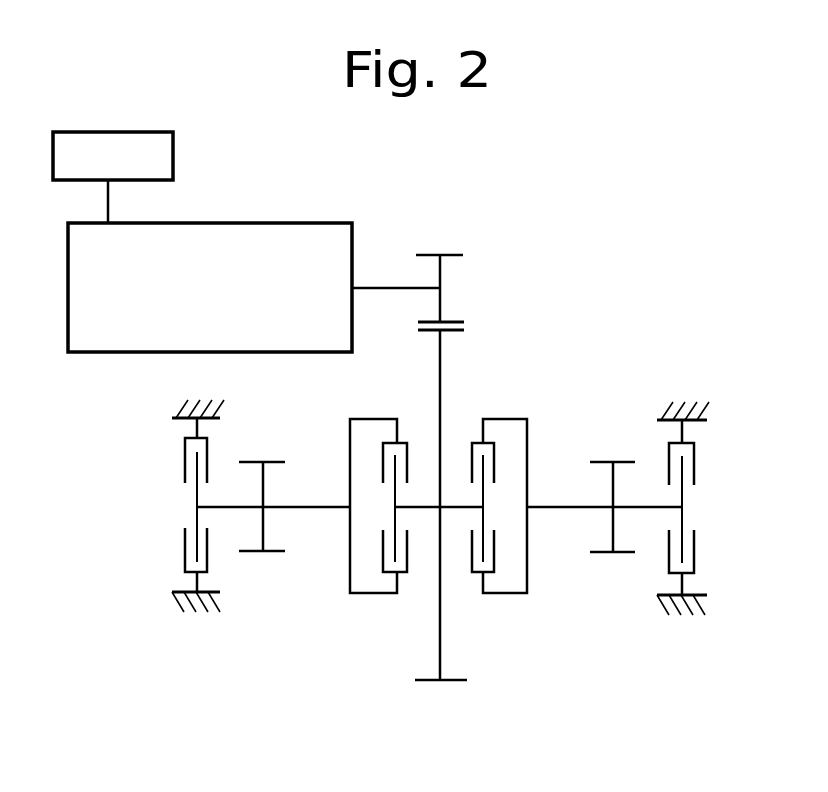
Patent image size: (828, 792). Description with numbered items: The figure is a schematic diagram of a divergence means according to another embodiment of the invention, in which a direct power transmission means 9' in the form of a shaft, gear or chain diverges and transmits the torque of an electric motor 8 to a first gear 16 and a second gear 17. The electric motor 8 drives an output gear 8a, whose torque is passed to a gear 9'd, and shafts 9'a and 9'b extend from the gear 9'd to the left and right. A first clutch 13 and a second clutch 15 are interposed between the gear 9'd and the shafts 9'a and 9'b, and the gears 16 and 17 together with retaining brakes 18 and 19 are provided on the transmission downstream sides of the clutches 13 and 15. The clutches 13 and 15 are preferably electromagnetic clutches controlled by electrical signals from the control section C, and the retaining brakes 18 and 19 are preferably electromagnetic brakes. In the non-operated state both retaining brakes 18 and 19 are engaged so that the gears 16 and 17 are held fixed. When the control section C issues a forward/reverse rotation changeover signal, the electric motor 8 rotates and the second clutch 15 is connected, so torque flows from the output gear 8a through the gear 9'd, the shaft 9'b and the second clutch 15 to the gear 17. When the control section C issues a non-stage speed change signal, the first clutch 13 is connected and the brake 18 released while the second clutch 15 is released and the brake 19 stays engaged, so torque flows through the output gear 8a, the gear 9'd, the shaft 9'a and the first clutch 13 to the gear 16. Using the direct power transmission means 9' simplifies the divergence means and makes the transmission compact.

The control section C is at (173, 156).
The electric motor 8 is at (287, 223).
The output gear 8a is at (440, 279).
The direct power transmission means 9' is at (457, 505).
The shaft 9'a is at (273, 474).
The shaft 9'b is at (604, 473).
The gear 9'd is at (450, 713).
The first clutch 13 is at (400, 572).
The second clutch 15 is at (477, 572).
The first gear 16 is at (263, 533).
The second gear 17 is at (613, 532).
The retaining brake 18 is at (185, 460).
The retaining brake 19 is at (694, 467).